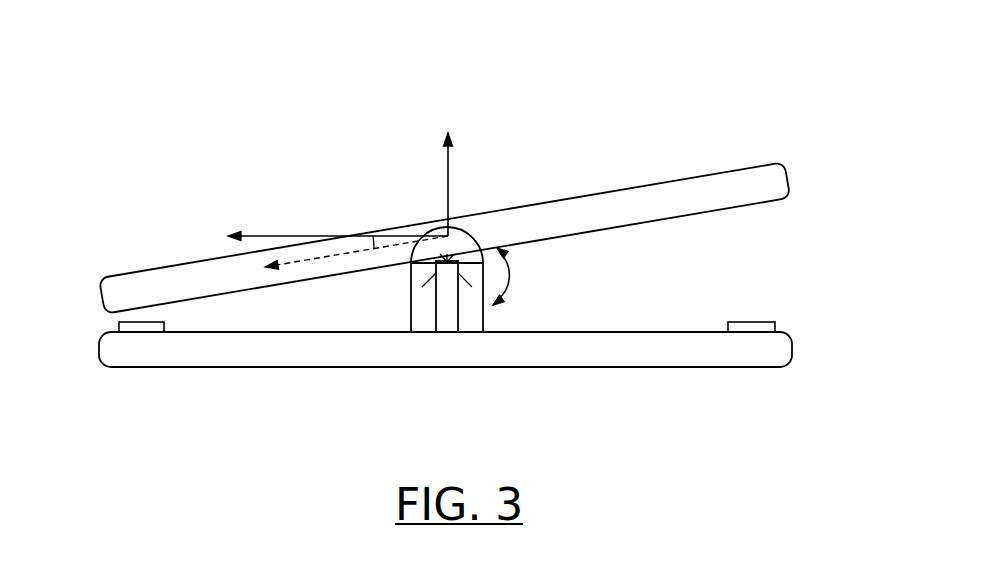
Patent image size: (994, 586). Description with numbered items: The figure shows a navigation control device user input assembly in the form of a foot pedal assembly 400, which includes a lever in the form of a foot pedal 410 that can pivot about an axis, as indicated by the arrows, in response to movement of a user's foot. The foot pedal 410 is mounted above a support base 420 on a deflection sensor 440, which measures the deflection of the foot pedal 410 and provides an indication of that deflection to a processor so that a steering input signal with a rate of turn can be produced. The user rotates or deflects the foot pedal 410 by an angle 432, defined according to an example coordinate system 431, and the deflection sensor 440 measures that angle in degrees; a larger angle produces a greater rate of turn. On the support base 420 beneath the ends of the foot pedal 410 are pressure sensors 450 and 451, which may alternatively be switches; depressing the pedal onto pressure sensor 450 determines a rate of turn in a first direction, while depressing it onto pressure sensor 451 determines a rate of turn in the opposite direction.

The foot pedal assembly 400 is at (620, 70).
The foot pedal 410 is at (663, 190).
The support base 420 is at (665, 350).
The coordinate system 431 is at (418, 152).
The angle 432 is at (365, 240).
The deflection sensor 440 is at (448, 315).
The pressure sensor 450 is at (153, 327).
The pressure sensor 451 is at (738, 320).